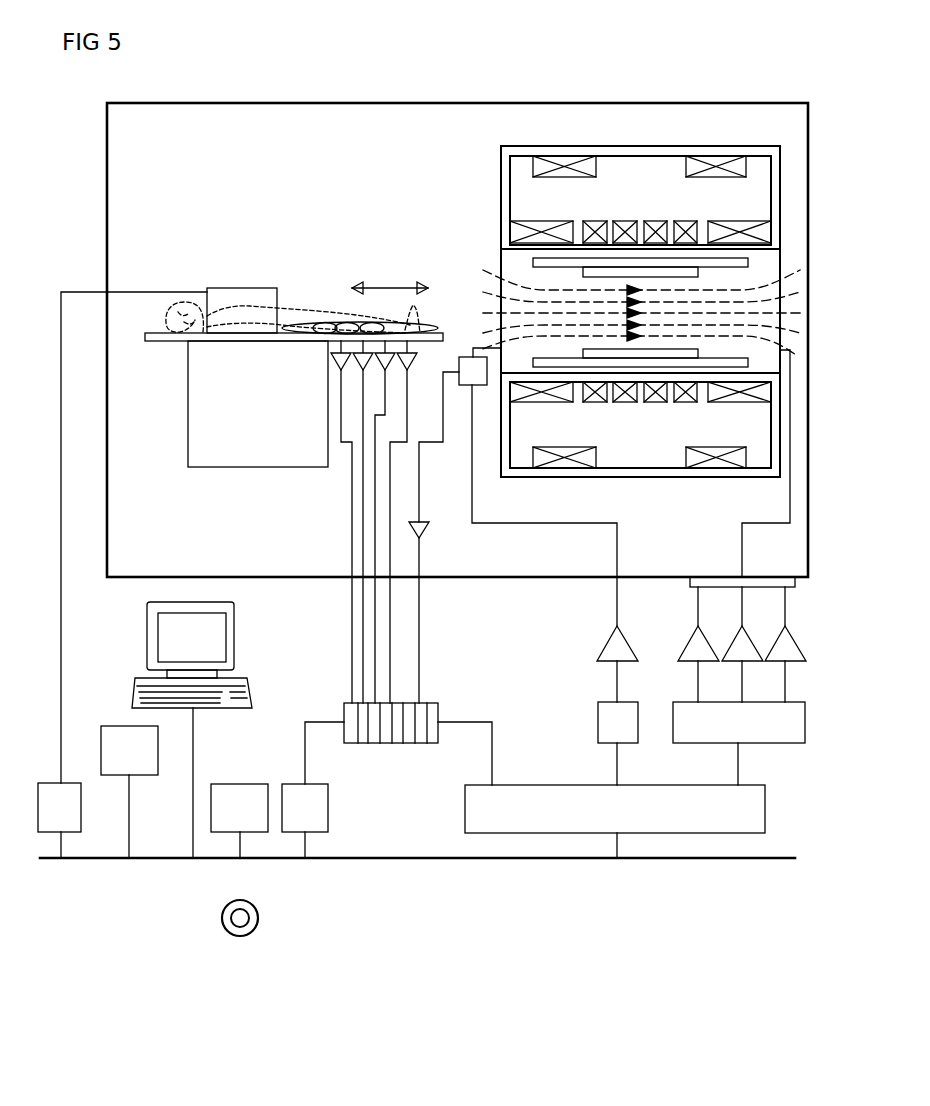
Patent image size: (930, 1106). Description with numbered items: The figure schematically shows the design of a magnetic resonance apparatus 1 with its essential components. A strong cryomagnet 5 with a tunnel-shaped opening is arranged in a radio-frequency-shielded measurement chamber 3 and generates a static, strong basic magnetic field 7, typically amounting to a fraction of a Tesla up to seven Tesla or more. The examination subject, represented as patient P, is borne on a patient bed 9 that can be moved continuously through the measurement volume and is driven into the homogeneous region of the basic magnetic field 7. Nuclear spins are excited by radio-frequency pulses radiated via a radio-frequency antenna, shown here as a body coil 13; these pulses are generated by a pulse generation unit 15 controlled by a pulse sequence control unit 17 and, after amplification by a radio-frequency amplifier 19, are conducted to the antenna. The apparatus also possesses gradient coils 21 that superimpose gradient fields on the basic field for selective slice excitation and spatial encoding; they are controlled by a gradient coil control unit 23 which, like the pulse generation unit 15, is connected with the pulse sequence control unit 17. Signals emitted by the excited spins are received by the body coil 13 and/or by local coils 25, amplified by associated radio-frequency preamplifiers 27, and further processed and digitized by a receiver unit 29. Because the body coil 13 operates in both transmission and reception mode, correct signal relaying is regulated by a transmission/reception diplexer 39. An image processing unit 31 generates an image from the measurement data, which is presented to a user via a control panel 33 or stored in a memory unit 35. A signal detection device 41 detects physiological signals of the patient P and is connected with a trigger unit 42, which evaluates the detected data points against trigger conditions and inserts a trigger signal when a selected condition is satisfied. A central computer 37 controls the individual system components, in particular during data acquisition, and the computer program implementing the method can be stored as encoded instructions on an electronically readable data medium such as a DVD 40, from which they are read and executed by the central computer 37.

The magnetic resonance apparatus 1 is at (428, 864).
The radio-frequency-shielded measurement chamber 3 is at (340, 103).
The cryomagnet 5 is at (597, 146).
The basic magnetic field 7 is at (488, 276).
The patient bed 9 is at (150, 343).
The body coil 13 is at (672, 268).
The pulse generation unit 15 is at (598, 712).
The pulse sequence control unit 17 is at (539, 785).
The radio-frequency amplifier 19 is at (600, 648).
The gradient coils 21 is at (535, 262).
The gradient coil control unit 23 is at (676, 702).
The local coils 25 is at (365, 323).
The radio-frequency preamplifier 27 is at (414, 364).
The receiver unit 29 is at (395, 743).
The image processing unit 31 is at (330, 816).
The control panel 33 is at (234, 645).
The memory unit 35 is at (123, 726).
The central computer 37 is at (258, 784).
The transmission/reception diplexer 39 is at (466, 386).
The DVD 40 is at (258, 920).
The signal detection device 41 is at (215, 288).
The trigger unit 42 is at (60, 783).
The patient P is at (246, 315).